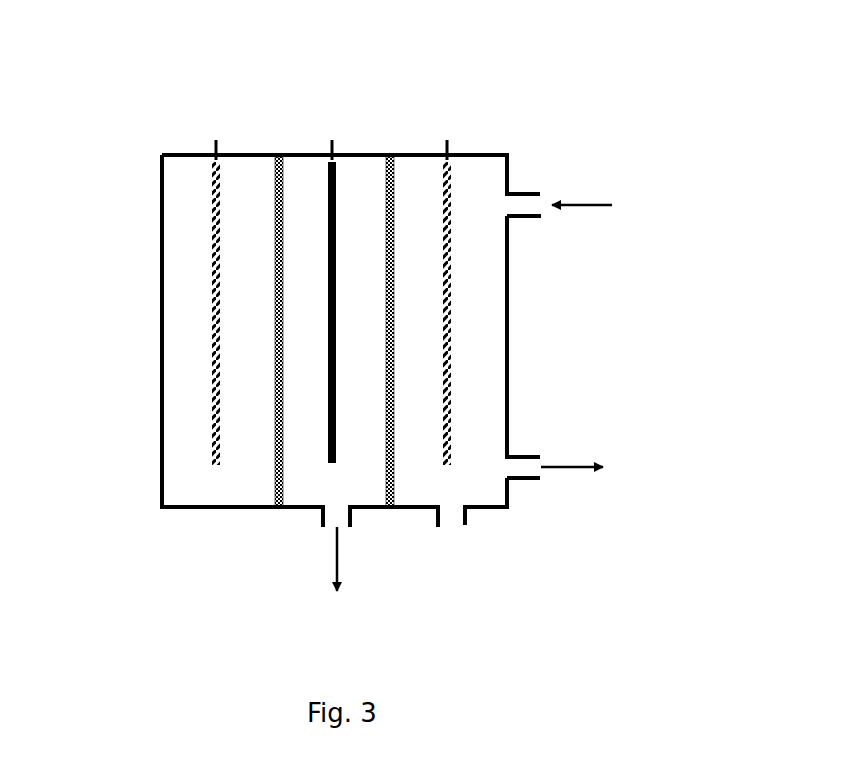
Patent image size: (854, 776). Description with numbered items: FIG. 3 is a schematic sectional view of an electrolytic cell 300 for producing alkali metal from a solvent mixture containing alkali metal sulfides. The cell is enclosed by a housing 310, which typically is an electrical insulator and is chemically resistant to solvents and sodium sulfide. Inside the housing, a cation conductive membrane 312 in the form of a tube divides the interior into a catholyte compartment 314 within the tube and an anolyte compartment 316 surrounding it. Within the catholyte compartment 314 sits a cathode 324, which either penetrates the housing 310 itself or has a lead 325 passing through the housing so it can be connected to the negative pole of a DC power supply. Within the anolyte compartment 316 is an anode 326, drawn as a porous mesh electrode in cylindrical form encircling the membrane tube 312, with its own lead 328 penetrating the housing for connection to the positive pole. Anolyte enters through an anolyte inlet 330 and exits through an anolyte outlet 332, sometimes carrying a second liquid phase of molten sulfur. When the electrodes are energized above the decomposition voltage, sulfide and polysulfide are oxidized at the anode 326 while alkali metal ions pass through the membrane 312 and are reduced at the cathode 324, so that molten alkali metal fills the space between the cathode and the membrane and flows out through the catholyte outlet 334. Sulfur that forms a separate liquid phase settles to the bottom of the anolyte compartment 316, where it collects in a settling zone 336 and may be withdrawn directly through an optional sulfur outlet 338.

The electrolytic cell 300 is at (165, 62).
The housing 310 is at (162, 214).
The cation conductive membrane 312 is at (277, 475).
The catholyte compartment 314 is at (358, 482).
The anolyte compartment 316 is at (172, 298).
The cathode 324 is at (330, 203).
The lead 325 is at (333, 150).
The anode 326 is at (216, 378).
The lead 328 is at (215, 147).
The anolyte inlet 330 is at (532, 193).
The anolyte outlet 332 is at (530, 455).
The catholyte outlet 334 is at (322, 520).
The settling zone 336 is at (490, 493).
The sulfur outlet 338 is at (467, 518).